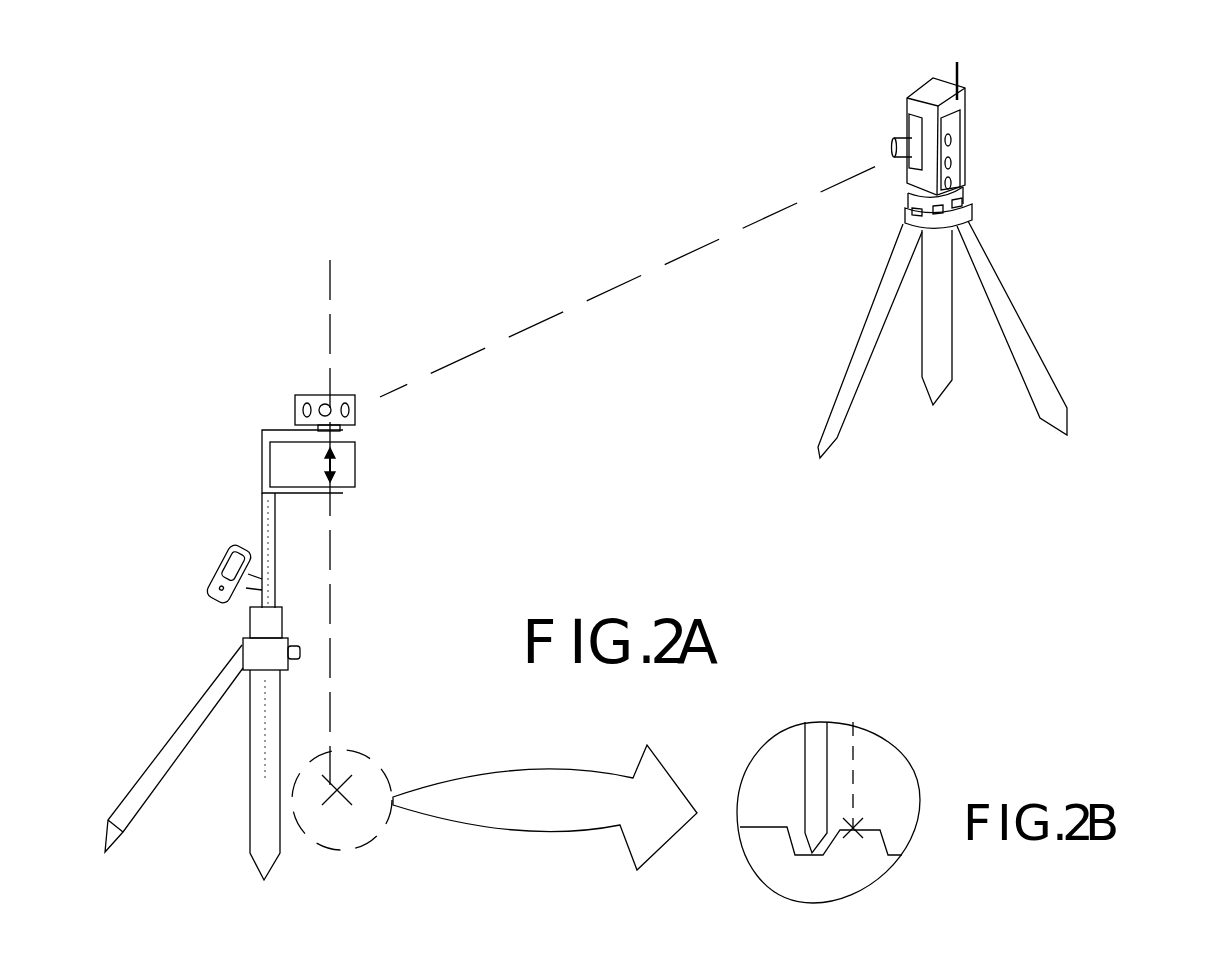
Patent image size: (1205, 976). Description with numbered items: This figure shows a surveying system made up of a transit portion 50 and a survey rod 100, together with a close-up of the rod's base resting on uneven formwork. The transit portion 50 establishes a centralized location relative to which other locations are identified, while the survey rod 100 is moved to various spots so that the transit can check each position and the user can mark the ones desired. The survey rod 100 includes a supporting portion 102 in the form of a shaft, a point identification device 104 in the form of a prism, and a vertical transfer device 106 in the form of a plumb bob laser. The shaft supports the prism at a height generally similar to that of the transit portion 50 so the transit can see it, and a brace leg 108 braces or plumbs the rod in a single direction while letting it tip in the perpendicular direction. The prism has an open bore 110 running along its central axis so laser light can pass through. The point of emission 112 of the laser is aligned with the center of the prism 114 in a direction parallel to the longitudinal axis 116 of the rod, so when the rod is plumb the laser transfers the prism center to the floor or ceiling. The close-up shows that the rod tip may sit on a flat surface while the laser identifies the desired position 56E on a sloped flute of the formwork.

In FIG. 2A, the transit portion 50 is at (1070, 137).
In FIG. 2A, the survey rod 100 is at (190, 373).
In FIG. 2A, the supporting portion 102 is at (272, 698).
In FIG. 2A, the point identification device 104 is at (343, 393).
In FIG. 2A, the vertical transfer device 106 is at (358, 468).
In FIG. 2A, the brace leg 108 is at (183, 738).
In FIG. 2A, the open bore 110 is at (318, 395).
In FIG. 2A, the point of emission 112 is at (343, 463).
In FIG. 2A, the center of the prism 114 is at (357, 410).
In FIG. 2A, the longitudinal axis 116 is at (277, 625).
In FIG. 2A, the desired position 56E is at (338, 785).
In FIG. 2B, the desired position 56E is at (854, 827).